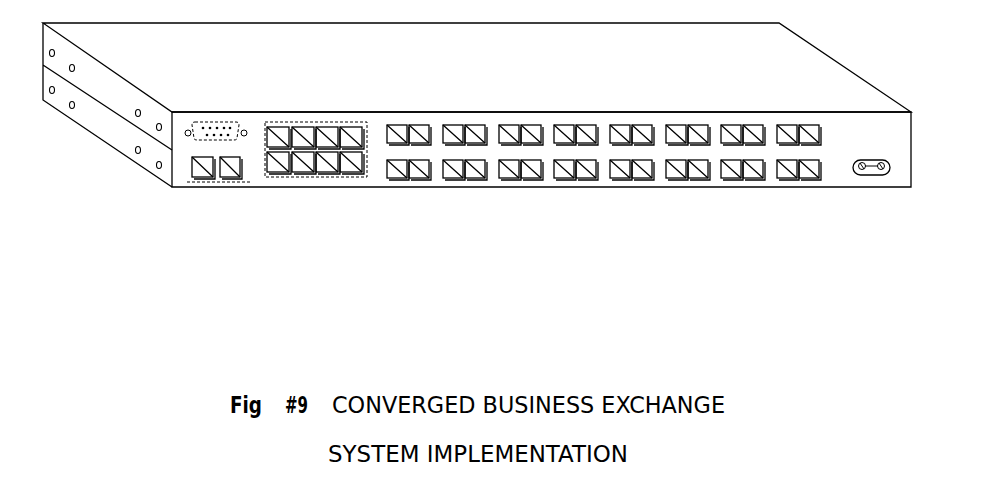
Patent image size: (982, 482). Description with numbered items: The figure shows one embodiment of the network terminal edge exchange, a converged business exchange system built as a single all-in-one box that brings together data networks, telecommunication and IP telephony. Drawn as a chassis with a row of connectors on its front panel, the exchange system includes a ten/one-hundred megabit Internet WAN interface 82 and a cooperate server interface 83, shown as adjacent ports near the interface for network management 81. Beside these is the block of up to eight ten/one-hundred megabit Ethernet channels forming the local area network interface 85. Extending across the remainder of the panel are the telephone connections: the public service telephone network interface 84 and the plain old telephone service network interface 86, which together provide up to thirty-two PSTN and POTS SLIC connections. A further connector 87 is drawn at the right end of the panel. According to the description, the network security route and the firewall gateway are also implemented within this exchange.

The interface for network management 81 is at (232, 135).
The Internet WAN interface 82 is at (191, 177).
The cooperate server interface 83 is at (221, 177).
The public service telephone network interface 84 is at (430, 178).
The local area network interface 85 is at (328, 177).
The plain old telephone service network interface 86 is at (683, 178).
The power connector 87 is at (861, 177).